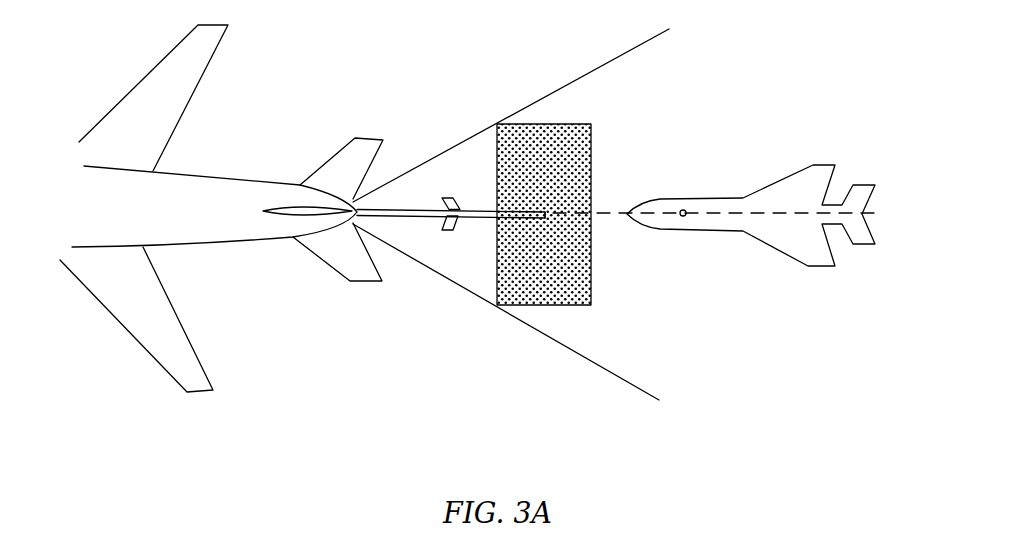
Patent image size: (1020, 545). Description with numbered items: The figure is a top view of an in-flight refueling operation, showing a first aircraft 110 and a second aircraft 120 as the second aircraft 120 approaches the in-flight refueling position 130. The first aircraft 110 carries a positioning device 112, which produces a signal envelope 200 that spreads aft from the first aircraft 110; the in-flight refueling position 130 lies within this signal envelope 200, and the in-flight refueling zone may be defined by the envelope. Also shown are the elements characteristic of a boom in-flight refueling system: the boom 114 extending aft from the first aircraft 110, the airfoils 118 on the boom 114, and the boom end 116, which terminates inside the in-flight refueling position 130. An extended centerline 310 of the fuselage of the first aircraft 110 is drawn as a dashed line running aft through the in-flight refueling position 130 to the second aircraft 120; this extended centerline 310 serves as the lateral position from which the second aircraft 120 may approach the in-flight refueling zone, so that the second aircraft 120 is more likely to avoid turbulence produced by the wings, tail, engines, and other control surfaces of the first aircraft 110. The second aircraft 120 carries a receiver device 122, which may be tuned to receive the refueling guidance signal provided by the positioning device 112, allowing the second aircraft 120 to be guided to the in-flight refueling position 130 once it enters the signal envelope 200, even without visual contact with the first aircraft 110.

The first aircraft 110 is at (215, 195).
The positioning device 112 is at (290, 243).
The boom 114 is at (422, 213).
The boom end 116 is at (542, 236).
The airfoils 118 is at (460, 196).
The second aircraft 120 is at (758, 162).
The receiver device 122 is at (683, 216).
The in-flight refueling position 130 is at (572, 290).
The signal envelope 200 is at (592, 369).
The extended centerline 310 is at (910, 217).